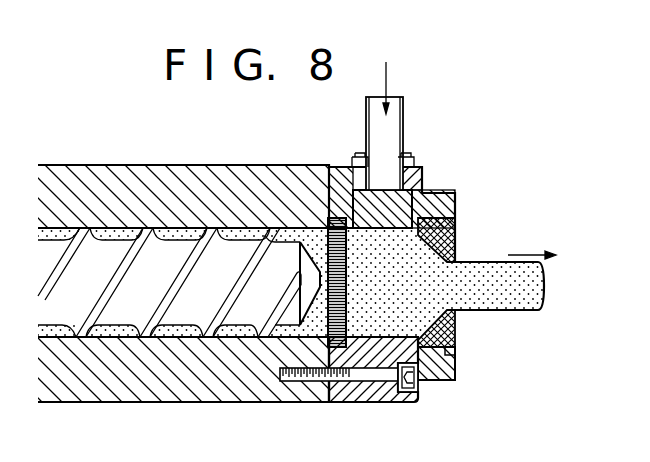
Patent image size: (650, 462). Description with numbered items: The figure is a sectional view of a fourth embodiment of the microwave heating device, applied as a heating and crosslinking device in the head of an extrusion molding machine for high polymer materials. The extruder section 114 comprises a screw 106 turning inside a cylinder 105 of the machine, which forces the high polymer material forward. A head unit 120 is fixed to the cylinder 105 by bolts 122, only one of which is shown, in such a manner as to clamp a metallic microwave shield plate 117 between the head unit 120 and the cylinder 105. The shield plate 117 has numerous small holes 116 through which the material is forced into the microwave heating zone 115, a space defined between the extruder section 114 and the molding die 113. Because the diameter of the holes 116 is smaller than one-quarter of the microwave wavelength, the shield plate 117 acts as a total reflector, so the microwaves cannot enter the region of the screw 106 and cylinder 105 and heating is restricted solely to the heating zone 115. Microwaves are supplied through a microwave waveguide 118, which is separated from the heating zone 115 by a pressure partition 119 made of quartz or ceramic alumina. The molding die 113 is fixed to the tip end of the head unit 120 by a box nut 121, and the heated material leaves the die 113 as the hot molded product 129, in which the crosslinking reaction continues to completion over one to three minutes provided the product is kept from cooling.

The cylinder 105 is at (217, 188).
The screw 106 is at (103, 250).
The extruder section 114 is at (181, 160).
The molding die 113 is at (455, 237).
The microwave heating zone 115 is at (413, 290).
The small holes 116 is at (346, 313).
The microwave shield plate 117 is at (348, 310).
The microwave waveguide 118 is at (393, 122).
The pressure partition 119 is at (384, 207).
The head unit 120 is at (342, 383).
The box nut 121 is at (452, 372).
The bolts 122 is at (399, 399).
The molded product 129 is at (515, 303).